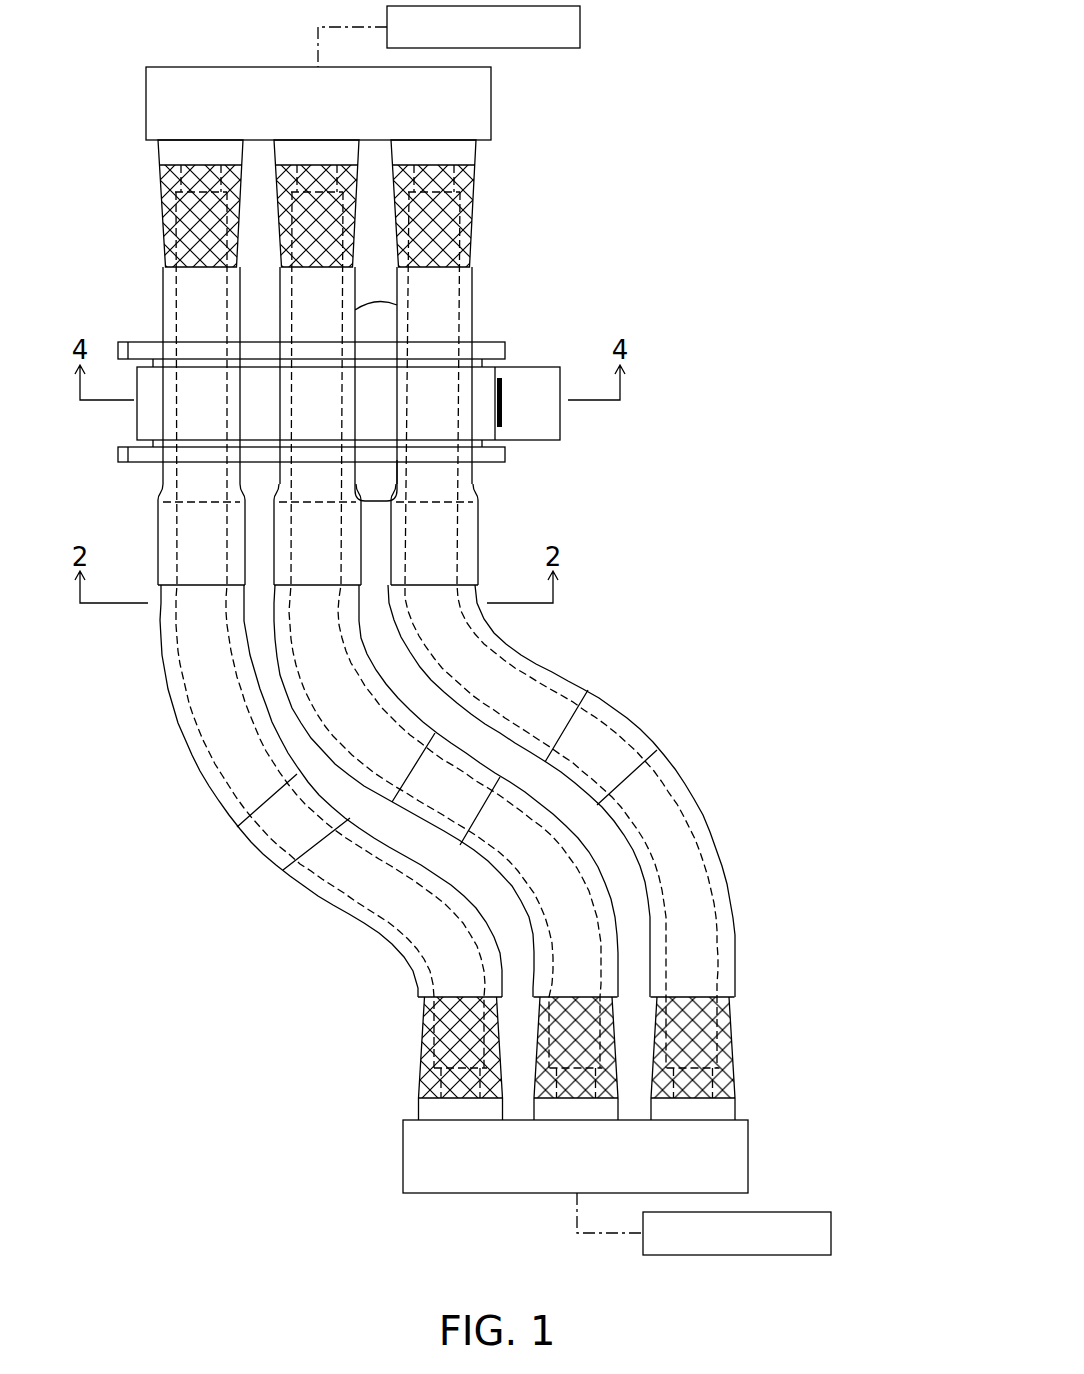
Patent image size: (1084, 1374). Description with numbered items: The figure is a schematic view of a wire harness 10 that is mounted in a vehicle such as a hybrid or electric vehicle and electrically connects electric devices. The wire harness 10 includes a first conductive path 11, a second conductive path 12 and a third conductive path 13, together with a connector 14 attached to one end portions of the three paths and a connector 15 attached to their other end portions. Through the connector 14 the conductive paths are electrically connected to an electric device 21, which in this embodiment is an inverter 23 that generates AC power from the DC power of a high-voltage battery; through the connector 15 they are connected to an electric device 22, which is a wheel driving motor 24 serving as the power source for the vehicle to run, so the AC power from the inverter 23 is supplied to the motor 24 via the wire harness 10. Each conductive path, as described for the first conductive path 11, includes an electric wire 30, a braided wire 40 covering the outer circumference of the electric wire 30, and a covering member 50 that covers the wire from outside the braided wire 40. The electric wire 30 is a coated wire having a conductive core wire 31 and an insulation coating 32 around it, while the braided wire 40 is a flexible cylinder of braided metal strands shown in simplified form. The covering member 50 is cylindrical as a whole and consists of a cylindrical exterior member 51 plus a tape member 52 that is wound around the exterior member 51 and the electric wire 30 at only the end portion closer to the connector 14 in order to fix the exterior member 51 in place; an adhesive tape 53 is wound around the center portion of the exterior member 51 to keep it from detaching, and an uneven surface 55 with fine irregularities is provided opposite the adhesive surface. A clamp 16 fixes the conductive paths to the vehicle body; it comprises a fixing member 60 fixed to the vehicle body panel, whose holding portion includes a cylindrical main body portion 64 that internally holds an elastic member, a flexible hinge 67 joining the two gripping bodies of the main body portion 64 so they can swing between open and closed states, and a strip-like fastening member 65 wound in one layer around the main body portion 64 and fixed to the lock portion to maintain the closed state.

The wire harness 10 is at (751, 247).
The first conductive path 11 is at (201, 803).
The second conductive path 12 is at (350, 737).
The third conductive path 13 is at (702, 788).
The connector 14 is at (491, 100).
The connector 15 is at (748, 1150).
The clamp 16 is at (507, 336).
The electric device 21 is at (516, 36).
The electric device 22 is at (774, 1224).
The inverter 23 is at (580, 25).
The wheel driving motor 24 is at (831, 1232).
The electric wire 30 is at (697, 831).
The core wire 31 is at (158, 183).
The insulation coating 32 is at (158, 232).
The braided wire 40 is at (415, 630).
The covering member 50 is at (80, 477).
The exterior member 51 is at (380, 790).
The tape member 52 is at (320, 585).
The adhesive tape 53 is at (272, 855).
The uneven surface 55 is at (170, 312).
The fixing member 60 is at (322, 342).
The main body portion 64 is at (436, 345).
The fastening member 65 is at (316, 425).
The hinge 67 is at (120, 352).